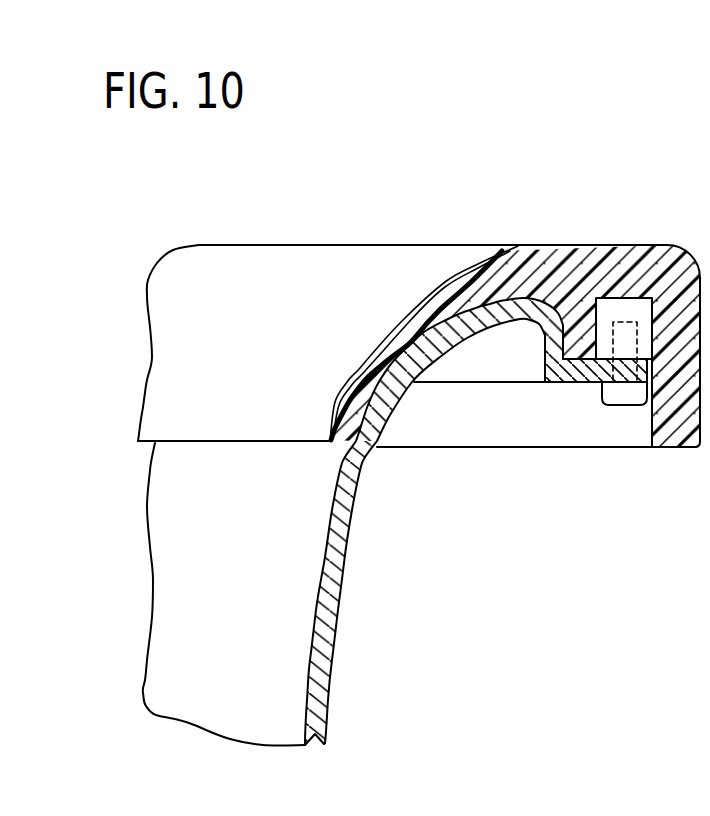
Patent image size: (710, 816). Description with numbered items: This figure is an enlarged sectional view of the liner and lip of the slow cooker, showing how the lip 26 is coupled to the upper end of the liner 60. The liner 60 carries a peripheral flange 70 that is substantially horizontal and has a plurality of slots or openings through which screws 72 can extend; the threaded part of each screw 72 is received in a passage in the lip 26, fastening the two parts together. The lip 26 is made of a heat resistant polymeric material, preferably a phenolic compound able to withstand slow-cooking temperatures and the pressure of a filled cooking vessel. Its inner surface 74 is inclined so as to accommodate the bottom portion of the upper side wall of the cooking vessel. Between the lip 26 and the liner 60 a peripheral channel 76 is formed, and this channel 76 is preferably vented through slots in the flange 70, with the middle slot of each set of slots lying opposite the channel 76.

The lip 26 is at (652, 245).
The liner 60 is at (331, 694).
The peripheral flange 70 is at (578, 385).
The screw 72 is at (628, 398).
The inner surface 74 is at (380, 344).
The peripheral channel 76 is at (608, 313).